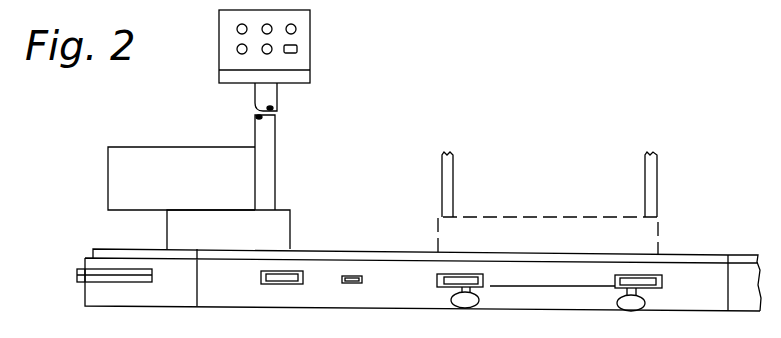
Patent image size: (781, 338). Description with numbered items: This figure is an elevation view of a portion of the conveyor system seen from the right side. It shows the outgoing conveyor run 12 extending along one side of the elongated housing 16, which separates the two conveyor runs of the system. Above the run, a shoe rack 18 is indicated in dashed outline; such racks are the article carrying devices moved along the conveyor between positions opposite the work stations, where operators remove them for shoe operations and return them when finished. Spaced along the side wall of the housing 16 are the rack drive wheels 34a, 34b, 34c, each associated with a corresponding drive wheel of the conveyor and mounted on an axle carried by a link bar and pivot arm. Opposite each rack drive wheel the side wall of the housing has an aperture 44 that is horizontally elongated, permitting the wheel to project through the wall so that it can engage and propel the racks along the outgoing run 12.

The outgoing conveyor run 12 is at (387, 265).
The elongated housing 16 is at (342, 250).
The shoe rack 18 is at (558, 220).
The rack drive wheel 34a is at (295, 271).
The rack drive wheel 34b is at (452, 279).
The rack drive wheel 34c is at (652, 282).
The aperture 44 is at (305, 278).